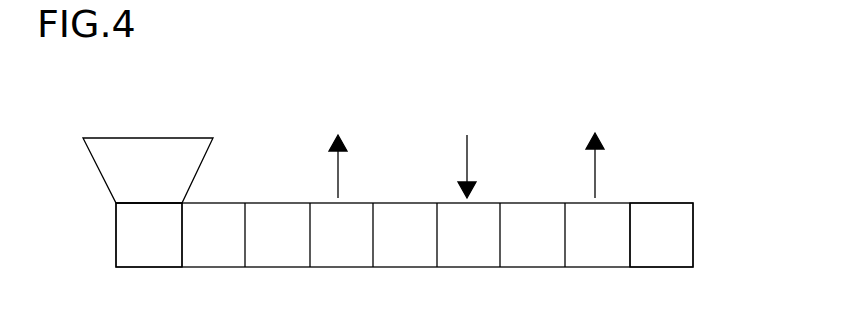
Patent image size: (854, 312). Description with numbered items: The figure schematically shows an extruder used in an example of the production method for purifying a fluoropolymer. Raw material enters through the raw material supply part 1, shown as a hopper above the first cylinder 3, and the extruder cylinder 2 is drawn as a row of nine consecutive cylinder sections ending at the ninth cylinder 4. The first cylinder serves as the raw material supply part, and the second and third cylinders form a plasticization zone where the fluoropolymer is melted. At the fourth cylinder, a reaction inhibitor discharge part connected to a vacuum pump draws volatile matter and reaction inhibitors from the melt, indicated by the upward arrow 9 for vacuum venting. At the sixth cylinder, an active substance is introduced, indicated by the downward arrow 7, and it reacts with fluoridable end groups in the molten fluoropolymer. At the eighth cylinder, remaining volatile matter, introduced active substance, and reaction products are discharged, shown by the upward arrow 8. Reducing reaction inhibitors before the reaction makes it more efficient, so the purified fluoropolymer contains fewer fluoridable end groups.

The raw material supply part 1 is at (97, 122).
The cylinder 2 is at (100, 217).
The first cylinder 3 is at (135, 246).
The ninth cylinder 4 is at (680, 243).
The introduction of active substance 7 is at (468, 147).
The removal of volatile matter and others 8 is at (596, 146).
The removal of volatile matter and reaction inhibitor (vacuum venting) 9 is at (338, 147).